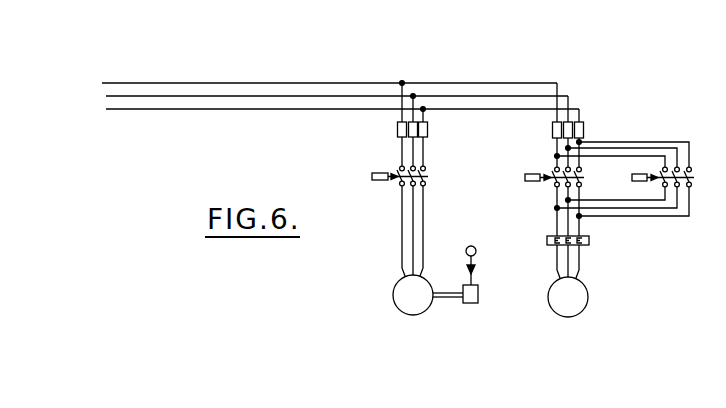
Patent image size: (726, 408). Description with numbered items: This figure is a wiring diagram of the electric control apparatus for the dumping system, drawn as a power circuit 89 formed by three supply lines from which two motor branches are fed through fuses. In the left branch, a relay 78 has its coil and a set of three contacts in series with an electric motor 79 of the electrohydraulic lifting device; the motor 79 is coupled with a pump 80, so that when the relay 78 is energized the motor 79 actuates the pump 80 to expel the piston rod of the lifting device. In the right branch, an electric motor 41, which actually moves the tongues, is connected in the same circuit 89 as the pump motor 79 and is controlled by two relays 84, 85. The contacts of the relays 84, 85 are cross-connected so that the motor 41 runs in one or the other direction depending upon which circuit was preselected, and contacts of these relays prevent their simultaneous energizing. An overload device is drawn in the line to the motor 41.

The circuit 89 is at (183, 108).
The relay 78 is at (399, 185).
The electric motor 79 is at (428, 310).
The pump 80 is at (478, 303).
The relay 84 is at (549, 185).
The relay 85 is at (657, 183).
The electric motor 41 is at (589, 297).